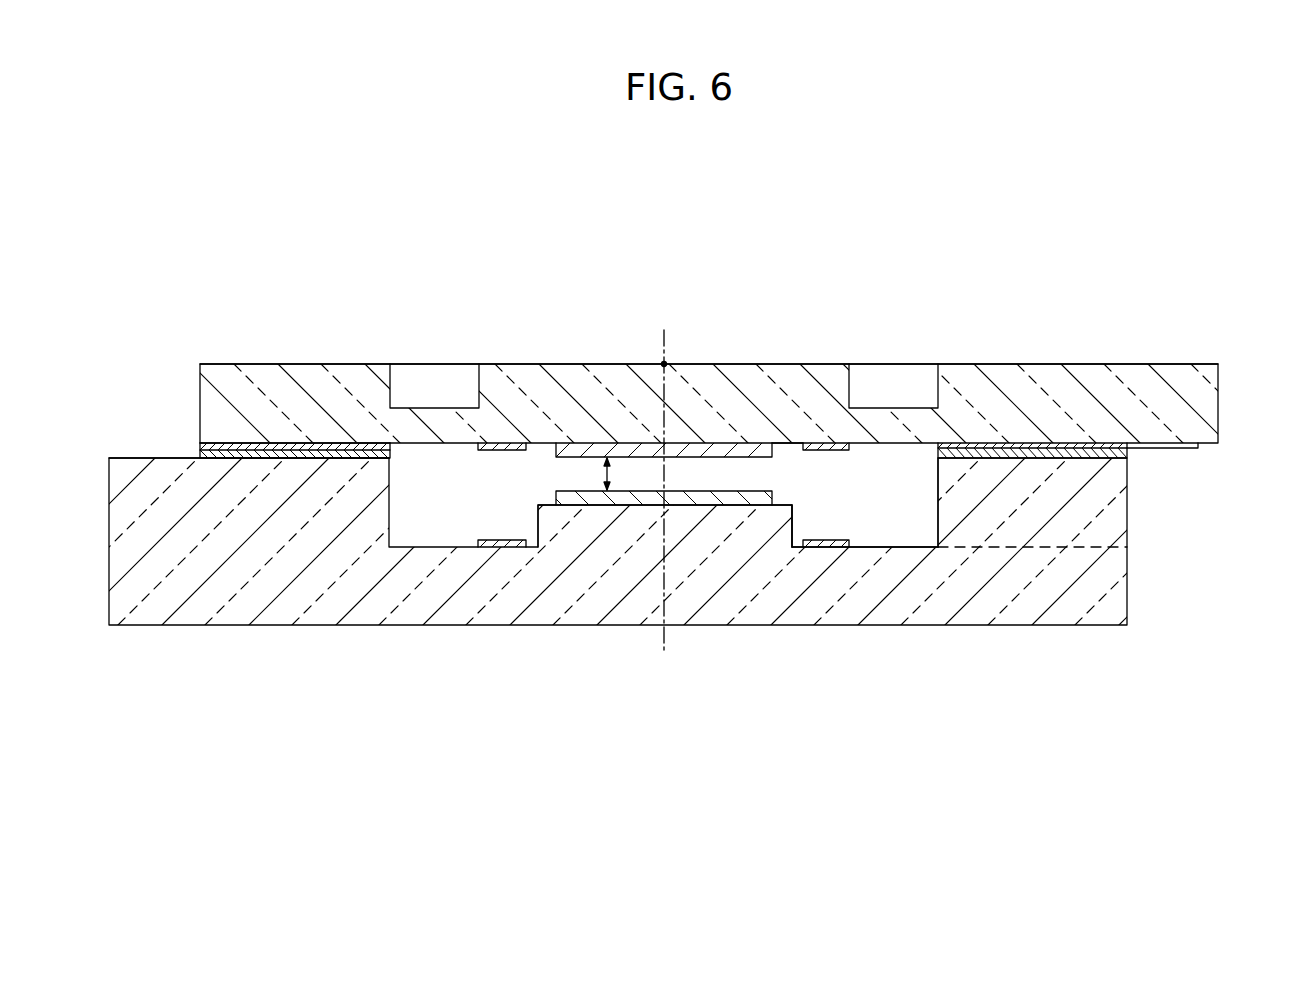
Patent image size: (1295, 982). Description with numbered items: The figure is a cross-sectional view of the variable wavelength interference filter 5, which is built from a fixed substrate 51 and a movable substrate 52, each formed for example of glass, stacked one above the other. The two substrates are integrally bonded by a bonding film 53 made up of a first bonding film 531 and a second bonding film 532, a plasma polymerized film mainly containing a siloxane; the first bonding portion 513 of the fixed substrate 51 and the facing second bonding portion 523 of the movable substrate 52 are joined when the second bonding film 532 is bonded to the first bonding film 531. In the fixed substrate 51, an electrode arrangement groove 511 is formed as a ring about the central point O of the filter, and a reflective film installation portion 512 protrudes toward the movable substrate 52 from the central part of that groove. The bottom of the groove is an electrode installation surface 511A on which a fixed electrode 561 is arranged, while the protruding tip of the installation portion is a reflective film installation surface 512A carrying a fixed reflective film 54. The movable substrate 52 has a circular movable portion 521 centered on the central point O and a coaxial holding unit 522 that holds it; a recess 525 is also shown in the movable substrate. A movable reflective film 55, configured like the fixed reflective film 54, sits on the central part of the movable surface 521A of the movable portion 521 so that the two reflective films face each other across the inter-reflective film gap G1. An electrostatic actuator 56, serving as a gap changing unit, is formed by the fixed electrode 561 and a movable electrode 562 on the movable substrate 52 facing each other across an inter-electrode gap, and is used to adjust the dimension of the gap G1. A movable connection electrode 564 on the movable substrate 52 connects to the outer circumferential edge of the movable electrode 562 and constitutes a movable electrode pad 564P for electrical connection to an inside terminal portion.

The variable wavelength interference filter 5 is at (930, 299).
The fixed substrate 51 is at (1127, 600).
The electrode arrangement groove 511 is at (935, 523).
The electrode installation surface 511A is at (886, 547).
The reflective film installation portion 512 is at (793, 523).
The reflective film installation surface 512A is at (796, 540).
The first bonding portion 513 is at (320, 460).
The movable substrate 52 is at (1218, 422).
The movable portion 521 is at (562, 364).
The movable surface 521A is at (795, 450).
The holding unit 522 is at (908, 408).
The second bonding portion 523 is at (253, 445).
The recess of lid 525 is at (320, 380).
The bonding film 53 is at (113, 365).
The first bonding film 531 is at (200, 457).
The second bonding film 532 is at (217, 446).
The fixed reflective film 54 is at (695, 507).
The movable reflective film 55 is at (704, 445).
The electrostatic actuator 56 is at (887, 472).
The fixed electrode 561 is at (840, 546).
The movable electrode 562 is at (838, 450).
The movable connection electrode 564 is at (922, 443).
The movable electrode pad 564P is at (1165, 448).
The central point O is at (655, 491).
The inter-reflective film gap G1 is at (622, 474).